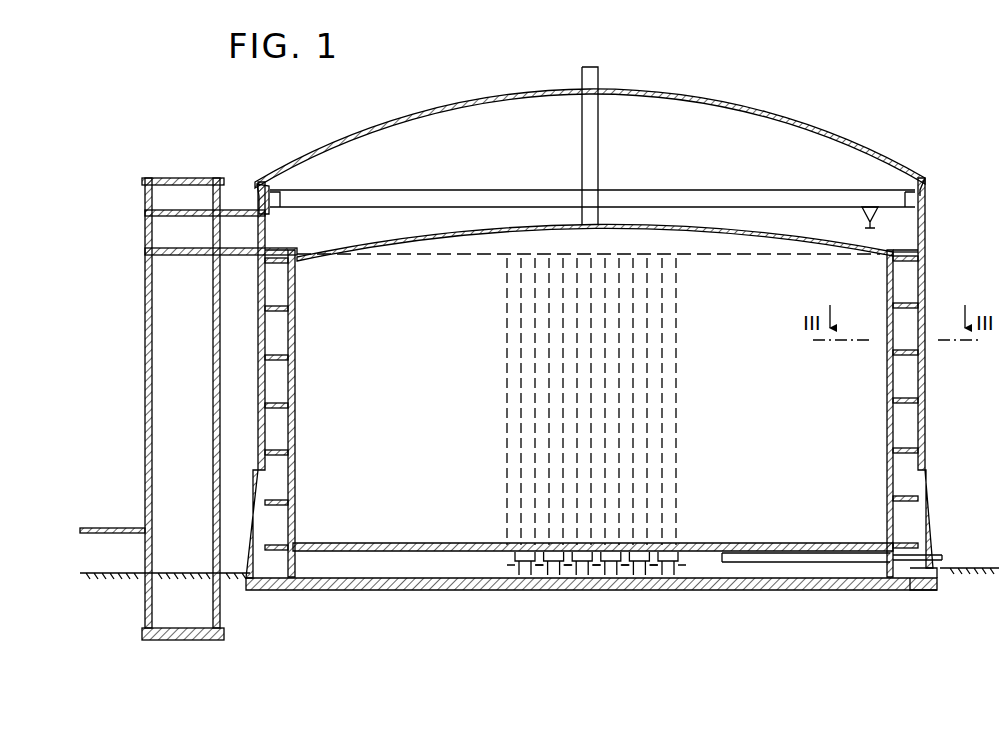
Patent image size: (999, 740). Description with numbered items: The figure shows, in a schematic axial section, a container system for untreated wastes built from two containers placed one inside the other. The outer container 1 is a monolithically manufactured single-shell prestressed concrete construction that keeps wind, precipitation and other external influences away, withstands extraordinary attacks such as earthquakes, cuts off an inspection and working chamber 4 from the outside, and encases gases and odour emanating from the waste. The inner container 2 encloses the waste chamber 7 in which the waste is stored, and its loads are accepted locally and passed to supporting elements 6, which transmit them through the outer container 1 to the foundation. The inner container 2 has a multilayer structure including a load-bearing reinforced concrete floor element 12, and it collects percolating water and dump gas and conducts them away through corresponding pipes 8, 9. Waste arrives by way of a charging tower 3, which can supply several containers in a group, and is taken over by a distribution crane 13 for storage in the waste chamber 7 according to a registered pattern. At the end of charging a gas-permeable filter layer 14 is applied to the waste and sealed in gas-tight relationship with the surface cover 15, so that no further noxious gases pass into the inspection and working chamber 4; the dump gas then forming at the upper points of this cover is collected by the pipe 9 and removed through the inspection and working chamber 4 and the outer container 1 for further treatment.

The outer container 1 is at (928, 517).
The inner container 2 is at (887, 487).
The charging tower 3 is at (145, 482).
The inspection and working chamber 4 is at (283, 415).
The supporting elements 6 is at (915, 450).
The waste chamber 7 is at (875, 420).
The pipe 8 is at (790, 560).
The pipe 9 is at (596, 118).
The floor element 12 is at (440, 552).
The distribution crane 13 is at (553, 195).
The gas-permeable filter layer 14 is at (665, 237).
The gas-tight surface cover 15 is at (865, 247).